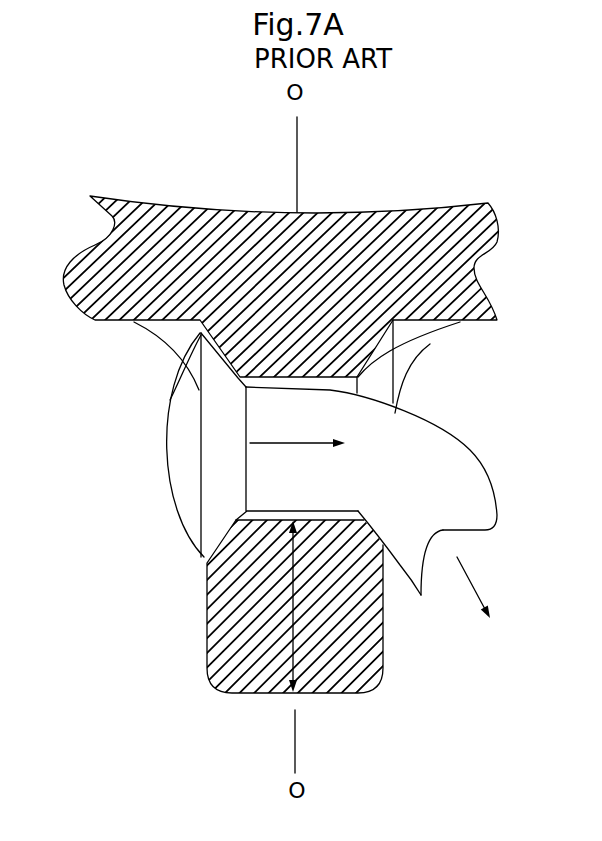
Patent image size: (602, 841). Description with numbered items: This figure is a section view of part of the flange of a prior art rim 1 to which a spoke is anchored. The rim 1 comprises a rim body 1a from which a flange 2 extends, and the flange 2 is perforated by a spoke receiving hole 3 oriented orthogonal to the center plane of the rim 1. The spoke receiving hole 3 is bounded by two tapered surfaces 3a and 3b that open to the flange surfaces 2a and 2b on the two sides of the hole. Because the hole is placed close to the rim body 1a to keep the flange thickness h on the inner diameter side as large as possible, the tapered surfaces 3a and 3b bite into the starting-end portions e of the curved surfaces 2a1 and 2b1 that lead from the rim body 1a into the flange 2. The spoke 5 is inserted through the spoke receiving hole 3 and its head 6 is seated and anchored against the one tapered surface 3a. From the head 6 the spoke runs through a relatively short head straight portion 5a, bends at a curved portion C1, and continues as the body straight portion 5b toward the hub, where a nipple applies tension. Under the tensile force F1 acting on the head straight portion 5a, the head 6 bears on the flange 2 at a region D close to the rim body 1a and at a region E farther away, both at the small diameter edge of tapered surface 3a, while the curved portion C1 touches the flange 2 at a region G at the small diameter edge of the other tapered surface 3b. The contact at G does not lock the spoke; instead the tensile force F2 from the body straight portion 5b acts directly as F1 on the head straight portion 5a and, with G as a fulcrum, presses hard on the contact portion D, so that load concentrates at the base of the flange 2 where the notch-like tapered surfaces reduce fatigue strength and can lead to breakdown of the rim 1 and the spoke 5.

The rim 1 is at (301, 249).
The rim body 1a is at (447, 260).
The flange 2 is at (355, 673).
The flange surface 2a is at (205, 580).
The curved surface 2a1 is at (163, 337).
The flange surface 2b is at (385, 655).
The curved surface 2b1 is at (423, 343).
The spoke receiving hole 3 is at (308, 378).
The tapered surface 3a is at (175, 420).
The tapered surface 3b is at (403, 378).
The spoke 5 is at (489, 459).
The head straight portion 5a is at (300, 505).
The body straight portion 5b is at (473, 505).
The head 6 is at (183, 480).
The starting-end portion e is at (134, 322).
The contact region D is at (238, 363).
The contact region G is at (337, 536).
The contact region E is at (235, 522).
The curved portion C1 is at (400, 567).
The thickness of the flange h is at (300, 606).
The tensile force F1 is at (297, 430).
The tensile force F2 is at (486, 603).